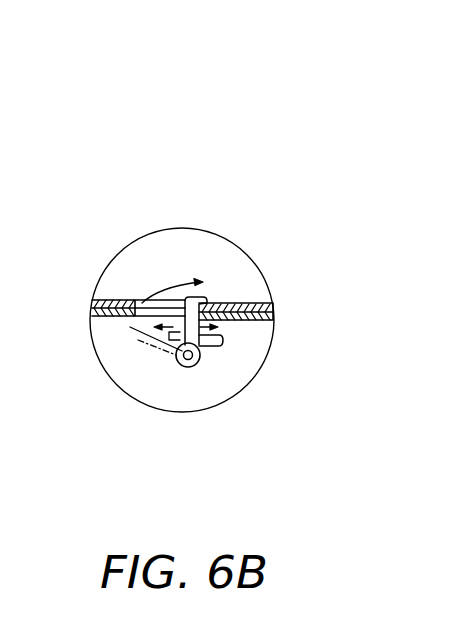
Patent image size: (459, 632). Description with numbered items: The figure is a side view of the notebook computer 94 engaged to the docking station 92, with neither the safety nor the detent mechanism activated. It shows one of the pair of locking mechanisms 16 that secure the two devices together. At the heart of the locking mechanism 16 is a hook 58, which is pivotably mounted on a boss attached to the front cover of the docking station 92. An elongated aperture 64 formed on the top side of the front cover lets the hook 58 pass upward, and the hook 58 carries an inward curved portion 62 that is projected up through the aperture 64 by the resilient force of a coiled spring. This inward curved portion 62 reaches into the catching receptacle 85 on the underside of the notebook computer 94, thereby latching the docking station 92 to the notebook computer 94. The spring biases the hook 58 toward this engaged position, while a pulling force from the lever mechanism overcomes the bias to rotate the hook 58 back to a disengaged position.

The locking mechanism 16 is at (342, 108).
The hook 58 is at (177, 357).
The inward curved portion 62 is at (205, 297).
The elongated aperture 64 is at (145, 323).
The catching receptacle 85 is at (140, 308).
The docking station 92 is at (276, 321).
The notebook computer 94 is at (257, 303).